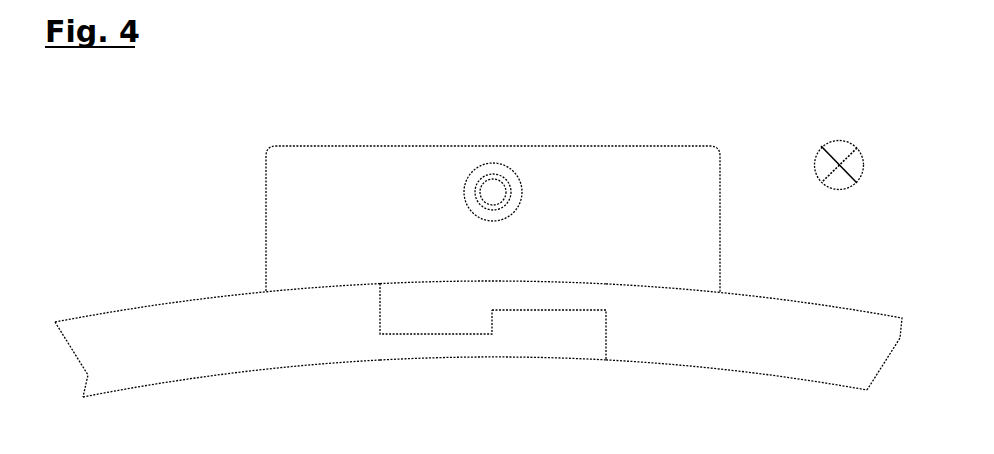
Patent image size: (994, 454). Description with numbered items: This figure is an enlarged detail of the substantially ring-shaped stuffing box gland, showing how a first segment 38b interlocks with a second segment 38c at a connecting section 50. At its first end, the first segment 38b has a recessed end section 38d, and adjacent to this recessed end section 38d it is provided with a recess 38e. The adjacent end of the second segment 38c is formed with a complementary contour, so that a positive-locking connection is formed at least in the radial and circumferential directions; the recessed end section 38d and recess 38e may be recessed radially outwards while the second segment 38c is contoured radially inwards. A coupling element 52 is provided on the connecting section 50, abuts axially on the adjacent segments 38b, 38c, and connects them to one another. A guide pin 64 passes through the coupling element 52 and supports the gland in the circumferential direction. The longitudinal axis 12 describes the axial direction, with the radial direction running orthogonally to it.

The connecting section 50 is at (478, 245).
The coupling element 52 is at (322, 219).
The guide pin 64 is at (485, 170).
The first segment 38b is at (193, 343).
The second segment 38c is at (708, 341).
The recessed end section 38d is at (547, 347).
The recess 38e is at (417, 347).
The longitudinal axis 12 is at (839, 182).